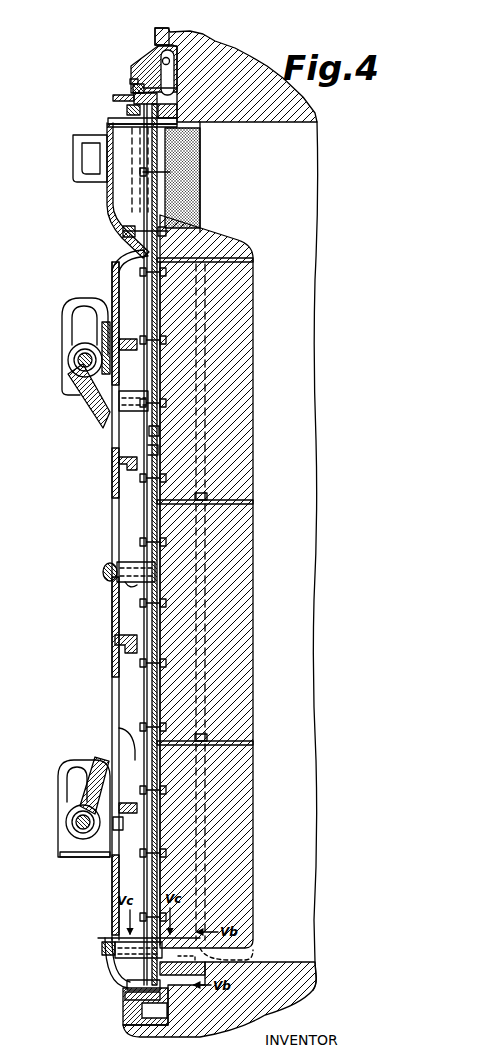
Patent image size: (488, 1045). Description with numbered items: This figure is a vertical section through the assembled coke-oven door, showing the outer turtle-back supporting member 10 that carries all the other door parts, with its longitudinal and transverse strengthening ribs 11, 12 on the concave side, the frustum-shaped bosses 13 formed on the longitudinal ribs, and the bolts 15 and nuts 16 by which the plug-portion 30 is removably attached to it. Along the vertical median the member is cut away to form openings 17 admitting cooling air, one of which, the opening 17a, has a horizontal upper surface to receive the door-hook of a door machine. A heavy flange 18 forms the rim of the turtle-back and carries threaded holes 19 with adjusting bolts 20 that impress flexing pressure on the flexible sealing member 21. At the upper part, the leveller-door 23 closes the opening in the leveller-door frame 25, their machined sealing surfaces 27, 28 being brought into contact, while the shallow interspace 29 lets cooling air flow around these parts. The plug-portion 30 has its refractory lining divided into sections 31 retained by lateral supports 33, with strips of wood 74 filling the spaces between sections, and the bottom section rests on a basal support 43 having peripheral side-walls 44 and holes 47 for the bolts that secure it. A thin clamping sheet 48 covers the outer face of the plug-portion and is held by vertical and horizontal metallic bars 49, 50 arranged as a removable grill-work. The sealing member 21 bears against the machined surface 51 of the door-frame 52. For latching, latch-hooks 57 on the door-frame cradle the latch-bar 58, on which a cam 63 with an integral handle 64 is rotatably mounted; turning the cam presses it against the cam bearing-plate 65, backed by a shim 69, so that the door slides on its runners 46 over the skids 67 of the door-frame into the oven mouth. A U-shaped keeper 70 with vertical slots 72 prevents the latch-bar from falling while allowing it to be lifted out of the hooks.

The turtle-back supporting member 10 is at (114, 599).
The longitudinal strengthening rib 11 is at (133, 507).
The transverse strengthening rib 12 is at (117, 463).
The frustum-shaped boss 13 is at (133, 391).
The bolt 15 is at (112, 736).
The nut 16 is at (107, 564).
The opening 17 is at (113, 436).
The door-hook opening 17a is at (114, 522).
The flange 18 is at (130, 81).
The threaded hole 19 is at (140, 88).
The adjusting bolt 20 is at (130, 98).
The flexible sealing member 21 is at (150, 72).
The leveller-door 23 is at (106, 205).
The leveller-door frame 25 is at (120, 232).
The machined sealing surface of leveller-door 27 is at (108, 121).
The machined sealing surface of leveller-door frame 28 is at (107, 126).
The interspace 29 is at (115, 275).
The plug-portion 30 is at (160, 690).
The refractory section 31 is at (248, 327).
The lateral support 33 is at (205, 292).
The basal support 43 is at (256, 952).
The peripheral side-wall 44 is at (300, 962).
The runner 46 is at (125, 986).
The hole 47 is at (182, 952).
The clamping sheet 48 is at (153, 431).
The vertical metallic bar 49 is at (150, 453).
The horizontal metallic bar 50 is at (135, 568).
The machined surface 51 is at (200, 53).
The door-frame 52 is at (170, 52).
The latch-hook 57 is at (74, 348).
The latch-bar 58 is at (75, 364).
The cam 63 is at (74, 346).
The handle 64 is at (100, 408).
The cam bearing-plate 65 is at (106, 325).
The skid 67 is at (128, 1008).
The shim 69 is at (112, 836).
The keeper 70 is at (72, 316).
The slot 72 is at (84, 306).
The wood strip 74 is at (253, 260).